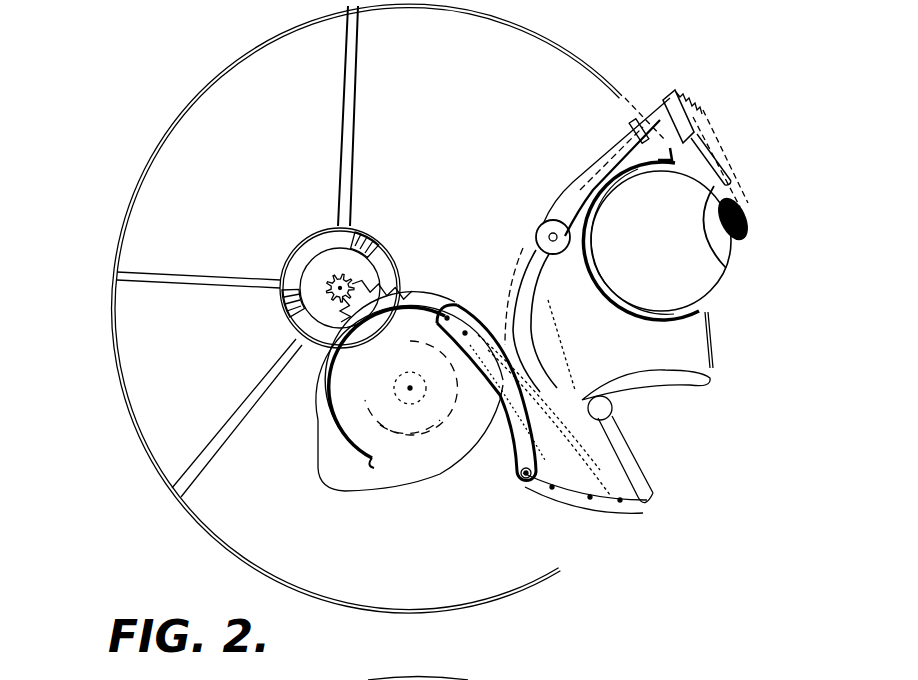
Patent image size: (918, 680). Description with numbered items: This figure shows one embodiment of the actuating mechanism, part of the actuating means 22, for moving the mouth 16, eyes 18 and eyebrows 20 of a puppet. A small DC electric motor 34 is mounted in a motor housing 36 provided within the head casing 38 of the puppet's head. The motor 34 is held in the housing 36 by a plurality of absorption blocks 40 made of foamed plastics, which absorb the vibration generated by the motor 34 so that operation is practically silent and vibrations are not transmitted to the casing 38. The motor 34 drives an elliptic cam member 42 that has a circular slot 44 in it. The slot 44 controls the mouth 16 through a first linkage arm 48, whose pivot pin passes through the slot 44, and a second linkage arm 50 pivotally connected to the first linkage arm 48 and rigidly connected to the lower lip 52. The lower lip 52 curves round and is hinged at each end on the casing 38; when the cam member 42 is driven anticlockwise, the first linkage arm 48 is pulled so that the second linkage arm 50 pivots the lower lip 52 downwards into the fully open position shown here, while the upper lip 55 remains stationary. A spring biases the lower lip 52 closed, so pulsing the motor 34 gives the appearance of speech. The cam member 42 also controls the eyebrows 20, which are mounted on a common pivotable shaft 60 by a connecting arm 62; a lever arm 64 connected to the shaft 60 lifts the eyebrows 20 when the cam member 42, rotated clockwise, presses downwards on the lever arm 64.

The mouth 16 is at (695, 406).
The eyes 18 is at (730, 273).
The eyebrows 20 is at (697, 97).
The actuating means 22 is at (222, 112).
The electric motor 34 is at (305, 253).
The motor housing 36 is at (400, 252).
The head casing 38 is at (114, 340).
The absorption blocks 40 is at (370, 240).
The cam member 42 is at (433, 480).
The circular slot 44 is at (335, 417).
The first linkage arm 48 is at (500, 443).
The second linkage arm 50 is at (568, 498).
The lower lip 52 is at (640, 482).
The upper lip 55 is at (712, 372).
The pivotable shaft 60 is at (545, 225).
The connecting arm 62 is at (592, 154).
The lever arm 64 is at (533, 302).